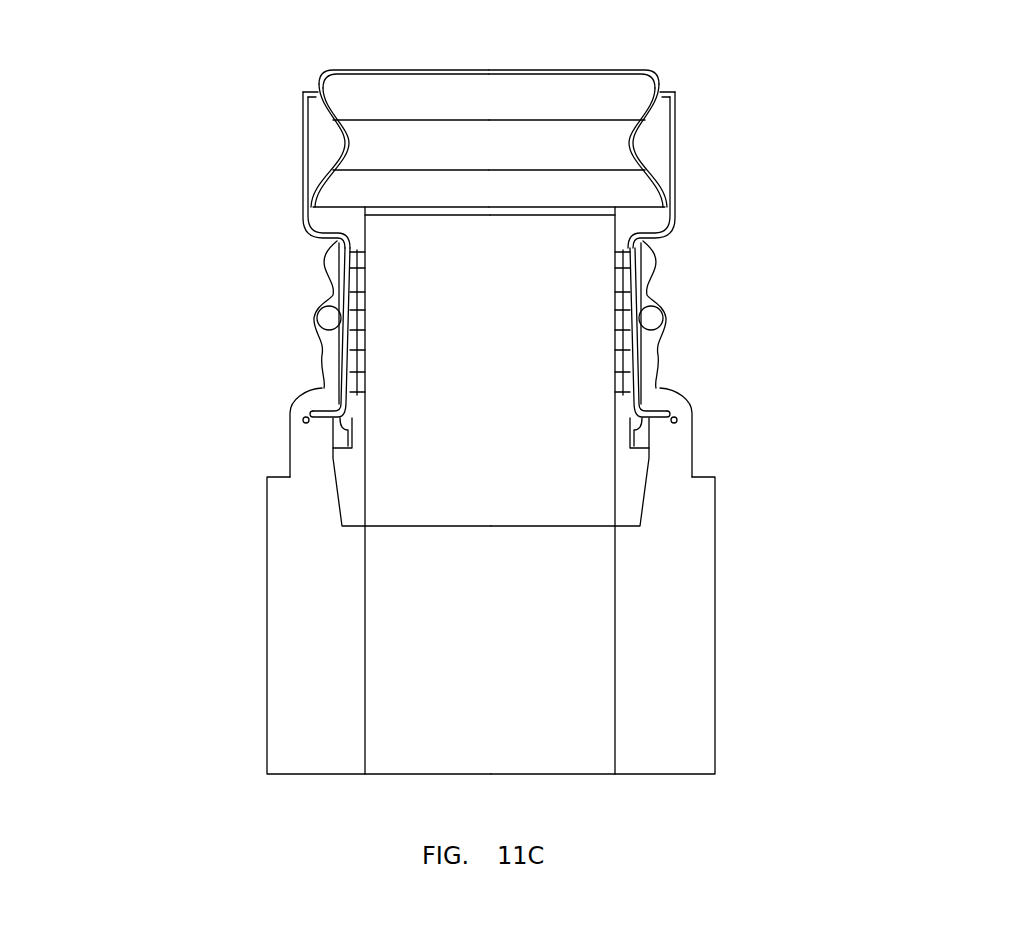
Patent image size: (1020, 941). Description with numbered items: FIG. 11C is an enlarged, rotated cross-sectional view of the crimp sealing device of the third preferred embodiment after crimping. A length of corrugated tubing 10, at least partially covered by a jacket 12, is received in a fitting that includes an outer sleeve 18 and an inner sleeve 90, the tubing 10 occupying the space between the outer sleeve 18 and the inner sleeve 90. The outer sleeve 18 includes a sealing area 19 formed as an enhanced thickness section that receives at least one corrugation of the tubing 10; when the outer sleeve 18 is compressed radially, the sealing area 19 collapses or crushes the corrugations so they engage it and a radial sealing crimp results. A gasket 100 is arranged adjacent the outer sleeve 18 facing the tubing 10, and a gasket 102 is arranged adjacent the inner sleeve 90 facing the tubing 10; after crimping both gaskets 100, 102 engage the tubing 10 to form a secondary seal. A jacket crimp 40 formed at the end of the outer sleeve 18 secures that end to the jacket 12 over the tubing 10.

The corrugated tubing 10 is at (362, 68).
The jacket 12 is at (677, 123).
The jacket crimp 40 is at (648, 245).
The gasket 100 is at (652, 318).
The gasket 102 is at (630, 393).
The outer sleeve 18 is at (693, 433).
The sealing area 19 is at (673, 455).
The inner sleeve 90 is at (502, 329).